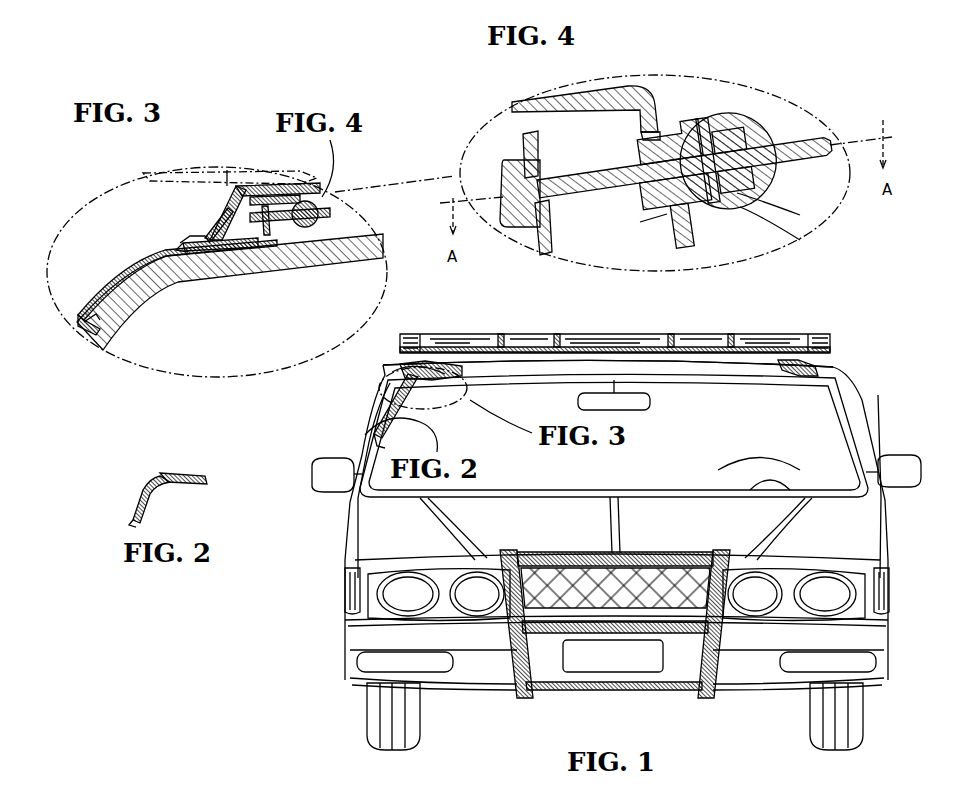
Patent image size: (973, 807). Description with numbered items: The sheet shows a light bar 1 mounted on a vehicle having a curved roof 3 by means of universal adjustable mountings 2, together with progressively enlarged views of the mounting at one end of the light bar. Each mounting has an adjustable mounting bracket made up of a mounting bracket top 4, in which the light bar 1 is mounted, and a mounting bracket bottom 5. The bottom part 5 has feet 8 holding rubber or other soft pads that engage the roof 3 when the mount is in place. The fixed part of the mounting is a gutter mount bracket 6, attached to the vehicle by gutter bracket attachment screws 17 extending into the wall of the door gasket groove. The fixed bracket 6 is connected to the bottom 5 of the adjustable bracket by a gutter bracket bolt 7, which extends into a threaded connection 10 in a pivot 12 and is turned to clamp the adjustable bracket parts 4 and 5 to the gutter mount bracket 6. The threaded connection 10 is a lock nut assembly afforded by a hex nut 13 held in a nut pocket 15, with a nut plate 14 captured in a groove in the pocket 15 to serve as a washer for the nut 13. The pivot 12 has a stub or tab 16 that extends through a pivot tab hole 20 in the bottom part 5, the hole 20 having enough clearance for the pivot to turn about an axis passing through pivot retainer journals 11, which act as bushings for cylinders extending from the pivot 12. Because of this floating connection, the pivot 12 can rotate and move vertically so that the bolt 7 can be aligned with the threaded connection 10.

In FIG. 1, the light bar 1 is at (758, 332).
In FIG. 1, the universal adjustable mountings 2 is at (400, 375).
In FIG. 2, the universal adjustable mountings 2 is at (160, 476).
In FIG. 1, the curved roof 3 is at (690, 362).
In FIG. 3, the curved roof 3 is at (217, 279).
In FIG. 3, the mounting bracket top 4 is at (227, 222).
In FIG. 3, the mounting bracket bottom 5 is at (187, 240).
In FIG. 4, the mounting bracket bottom 5 is at (620, 85).
In FIG. 1, the gutter mount bracket 6 is at (392, 392).
In FIG. 3, the gutter mount bracket 6 is at (110, 279).
In FIG. 4, the gutter mount bracket 6 is at (527, 137).
In FIG. 2, the gutter mount bracket 6 is at (150, 490).
In FIG. 4, the gutter bracket bolt 7 is at (500, 172).
In FIG. 3, the feet 8 is at (180, 243).
In FIG. 4, the threaded connection 10 is at (740, 207).
In FIG. 4, the pivot retainer journals 11 is at (667, 214).
In FIG. 4, the pivot 12 is at (737, 193).
In FIG. 4, the hex nut 13 is at (750, 110).
In FIG. 4, the nut plate 14 is at (700, 120).
In FIG. 4, the nut pocket 15 is at (727, 113).
In FIG. 4, the stub or tab 16 is at (667, 127).
In FIG. 1, the gutter bracket attachment screws 17 is at (380, 422).
In FIG. 3, the gutter bracket attachment screws 17 is at (90, 335).
In FIG. 2, the gutter bracket attachment screws 17 is at (136, 512).
In FIG. 4, the pivot tab hole 20 is at (675, 222).